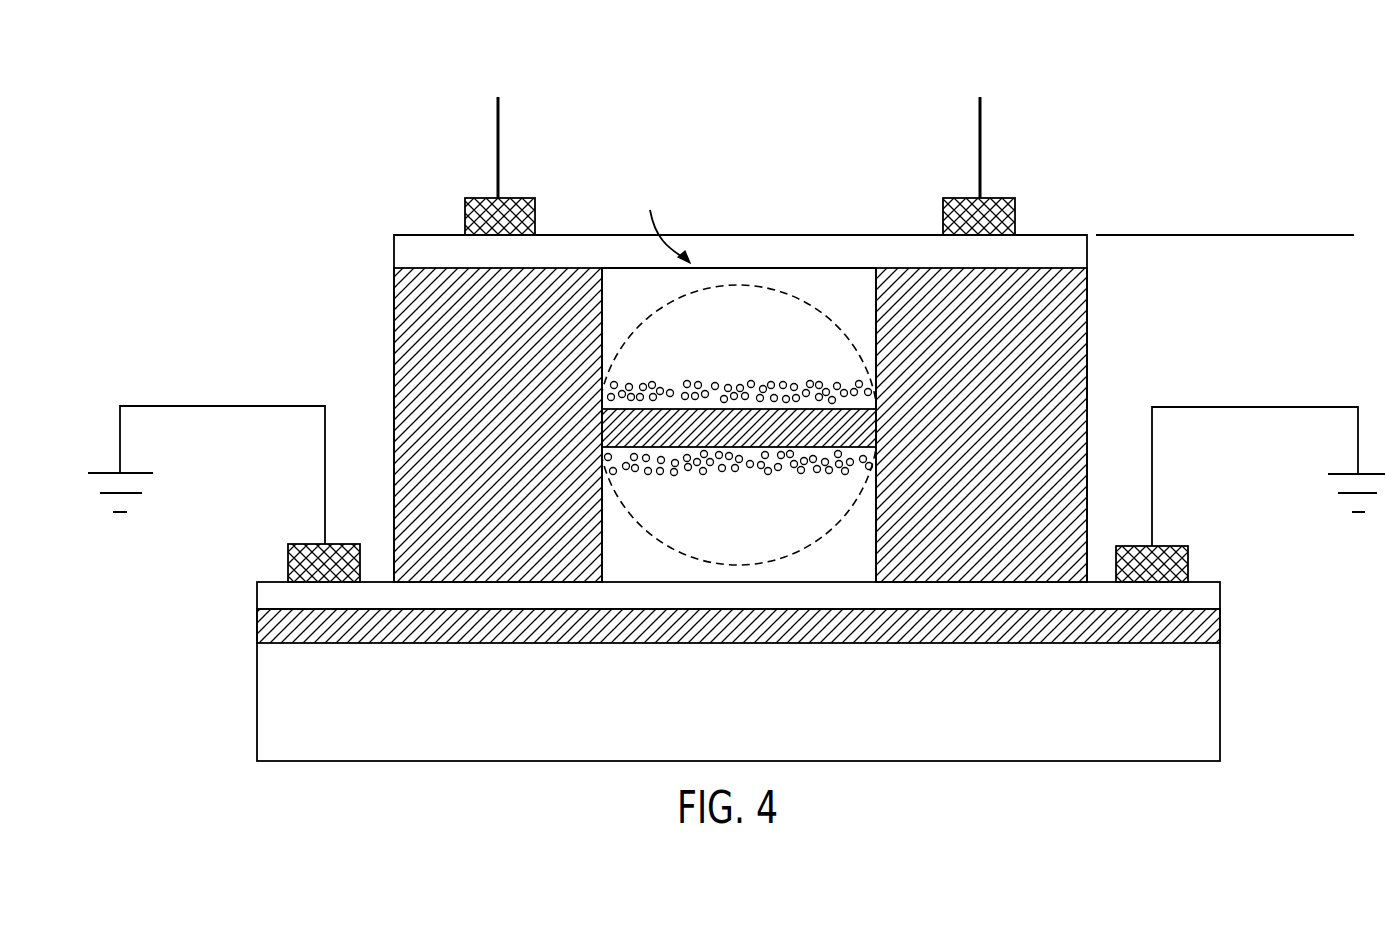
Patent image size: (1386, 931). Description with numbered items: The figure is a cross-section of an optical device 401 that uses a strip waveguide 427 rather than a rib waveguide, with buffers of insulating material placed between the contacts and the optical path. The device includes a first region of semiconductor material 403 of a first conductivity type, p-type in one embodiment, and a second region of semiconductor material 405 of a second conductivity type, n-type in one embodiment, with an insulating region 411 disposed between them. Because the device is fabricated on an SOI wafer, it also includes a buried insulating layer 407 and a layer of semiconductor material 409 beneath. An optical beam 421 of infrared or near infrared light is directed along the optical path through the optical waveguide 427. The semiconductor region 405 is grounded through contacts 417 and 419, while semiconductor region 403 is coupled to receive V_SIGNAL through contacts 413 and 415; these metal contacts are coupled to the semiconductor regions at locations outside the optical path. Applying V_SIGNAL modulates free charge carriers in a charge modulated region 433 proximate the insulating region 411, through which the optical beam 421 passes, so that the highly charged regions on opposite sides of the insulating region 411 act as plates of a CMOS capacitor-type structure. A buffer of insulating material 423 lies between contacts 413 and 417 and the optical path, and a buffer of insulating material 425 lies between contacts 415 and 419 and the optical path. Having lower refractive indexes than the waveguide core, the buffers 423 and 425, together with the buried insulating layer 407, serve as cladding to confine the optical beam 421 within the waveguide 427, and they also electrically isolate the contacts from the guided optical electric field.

The optical device 401 is at (1156, 148).
The first region of semiconductor material 403 is at (770, 243).
The second region of semiconductor material 405 is at (1212, 593).
The buried insulating layer 407 is at (1212, 628).
The layer of semiconductor material 409 is at (1212, 678).
The insulating region 411 is at (638, 440).
The contact 413 is at (465, 203).
The contact 415 is at (1016, 203).
The contact 417 is at (288, 553).
The contact 419 is at (1188, 558).
The optical beam 421 is at (795, 297).
The buffer of insulating material 423 is at (394, 331).
The buffer of insulating material 425 is at (1077, 333).
The strip waveguide 427 is at (660, 223).
The charge modulated region 433 is at (705, 390).